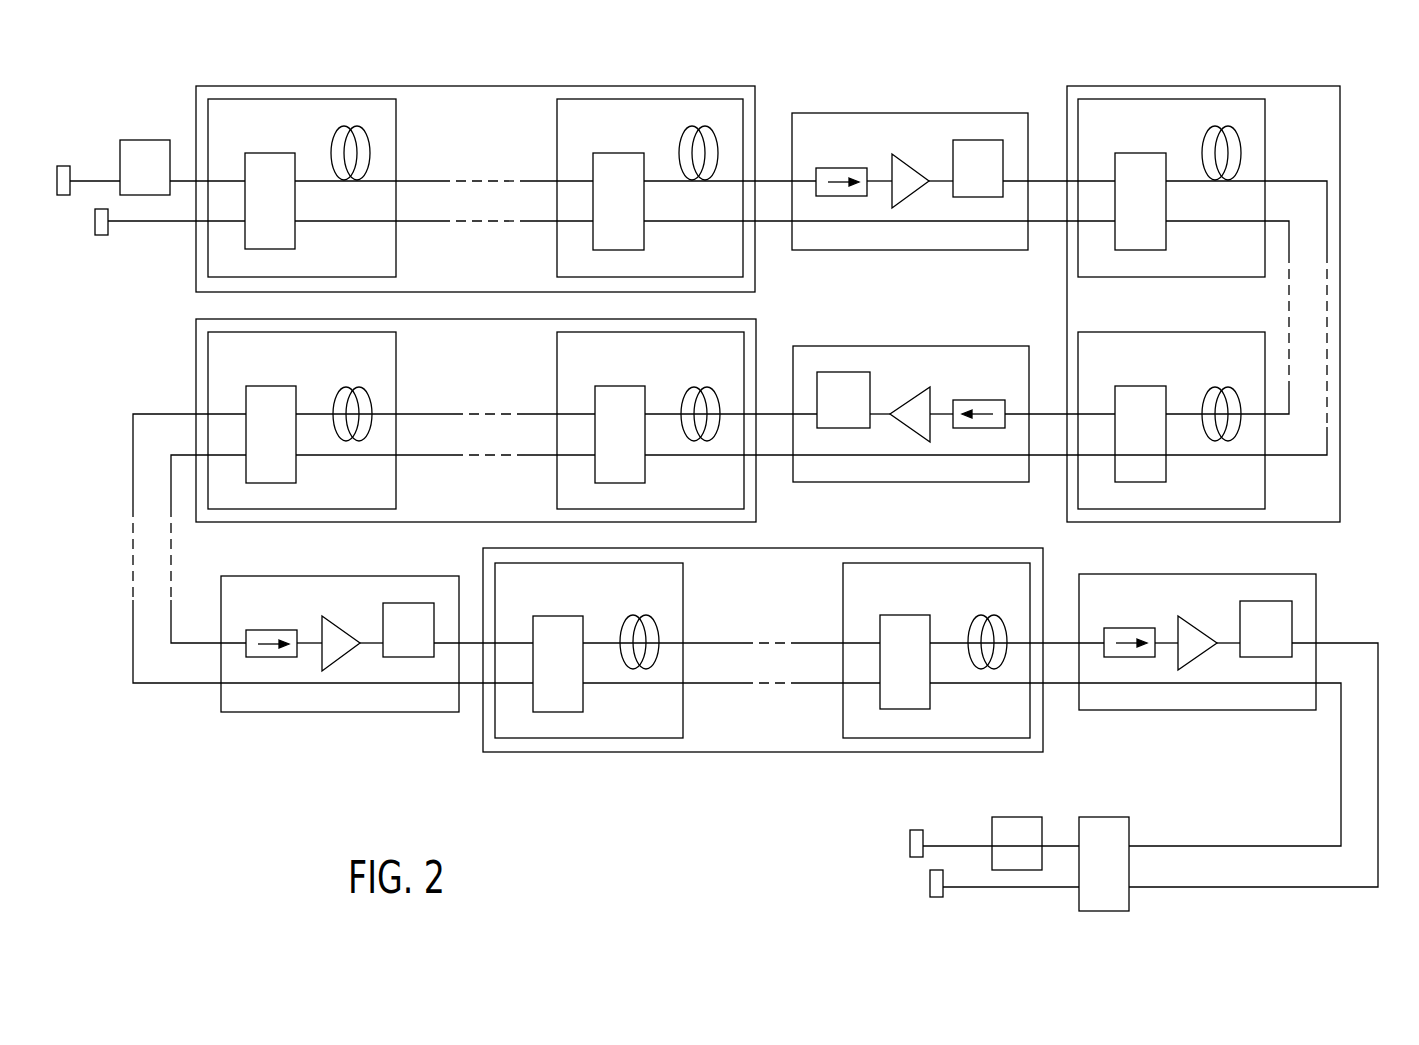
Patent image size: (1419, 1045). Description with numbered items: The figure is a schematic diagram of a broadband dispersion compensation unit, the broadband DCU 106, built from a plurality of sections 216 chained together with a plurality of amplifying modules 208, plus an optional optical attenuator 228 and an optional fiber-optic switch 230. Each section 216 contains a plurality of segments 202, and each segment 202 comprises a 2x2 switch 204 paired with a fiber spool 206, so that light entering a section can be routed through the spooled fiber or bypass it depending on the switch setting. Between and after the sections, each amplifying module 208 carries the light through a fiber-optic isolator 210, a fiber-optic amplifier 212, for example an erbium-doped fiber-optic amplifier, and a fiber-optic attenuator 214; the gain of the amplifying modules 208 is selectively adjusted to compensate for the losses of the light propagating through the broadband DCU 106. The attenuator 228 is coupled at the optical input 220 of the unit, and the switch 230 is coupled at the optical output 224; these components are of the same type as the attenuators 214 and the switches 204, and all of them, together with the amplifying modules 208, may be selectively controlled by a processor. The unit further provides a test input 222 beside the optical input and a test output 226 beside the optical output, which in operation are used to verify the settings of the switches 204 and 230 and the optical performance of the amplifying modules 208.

The broadband dispersion compensation unit 106 is at (1373, 57).
The segment 202 is at (333, 164).
The 2x2 switch 204 is at (270, 153).
The fiber spool 206 is at (355, 126).
The amplifying module 208 is at (799, 478).
The fiber-optic isolator 210 is at (830, 168).
The fiber-optic amplifier 212 is at (911, 166).
The fiber-optic attenuator 214 is at (978, 140).
The section 216 is at (764, 448).
The optical input 220 is at (63, 166).
The test input 222 is at (100, 236).
The optical output 224 is at (915, 830).
The test output 226 is at (936, 897).
The optical attenuator 228 is at (145, 140).
The fiber-optic switch 230 is at (1105, 911).